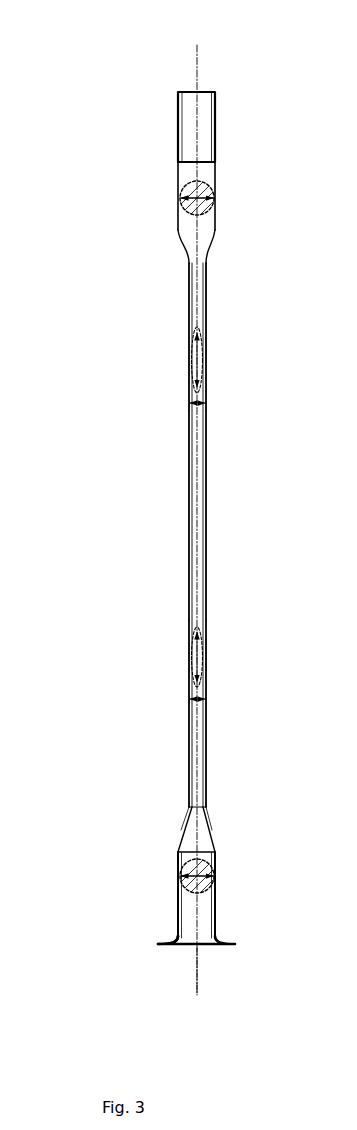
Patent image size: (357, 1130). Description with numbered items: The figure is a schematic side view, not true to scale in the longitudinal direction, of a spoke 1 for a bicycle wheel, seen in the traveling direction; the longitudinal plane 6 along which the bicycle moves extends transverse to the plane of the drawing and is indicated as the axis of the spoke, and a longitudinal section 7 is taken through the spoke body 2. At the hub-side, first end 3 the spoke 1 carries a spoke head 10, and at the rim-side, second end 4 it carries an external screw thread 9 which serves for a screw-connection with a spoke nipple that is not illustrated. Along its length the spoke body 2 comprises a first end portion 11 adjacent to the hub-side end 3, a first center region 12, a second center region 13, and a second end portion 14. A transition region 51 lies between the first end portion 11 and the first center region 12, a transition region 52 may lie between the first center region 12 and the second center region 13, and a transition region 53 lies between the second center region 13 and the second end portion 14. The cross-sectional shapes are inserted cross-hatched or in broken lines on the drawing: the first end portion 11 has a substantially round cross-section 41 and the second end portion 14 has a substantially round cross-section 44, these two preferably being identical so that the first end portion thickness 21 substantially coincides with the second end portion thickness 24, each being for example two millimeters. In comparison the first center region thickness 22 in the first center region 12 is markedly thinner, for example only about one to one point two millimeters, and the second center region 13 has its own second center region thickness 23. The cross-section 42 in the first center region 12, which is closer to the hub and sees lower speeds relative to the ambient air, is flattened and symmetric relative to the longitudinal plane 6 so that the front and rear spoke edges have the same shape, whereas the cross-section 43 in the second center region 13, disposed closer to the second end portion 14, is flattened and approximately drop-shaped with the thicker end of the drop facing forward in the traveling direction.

The spoke 1 is at (145, 78).
The spoke body 2 is at (175, 935).
The hub-side, first end 3 is at (148, 965).
The rim-side, second end 4 is at (172, 127).
The longitudinal plane 6 is at (198, 68).
The longitudinal section 7 is at (122, 322).
The screw thread 9 is at (215, 127).
The spoke head 10 is at (216, 938).
The first end portion 11 is at (179, 888).
The first center region 12 is at (179, 713).
The second center region 13 is at (177, 348).
The second end portion 14 is at (179, 211).
The first end portion thickness 21 is at (222, 878).
The first center region thickness 22 is at (204, 703).
The second center region thickness 23 is at (204, 405).
The second end portion thickness 24 is at (222, 200).
The cross-section 41 is at (206, 885).
The cross-section 42 is at (206, 640).
The cross-section 43 is at (206, 343).
The cross-section 44 is at (207, 208).
The transition region 51 is at (152, 828).
The transition region 52 is at (152, 496).
The transition region 53 is at (153, 251).